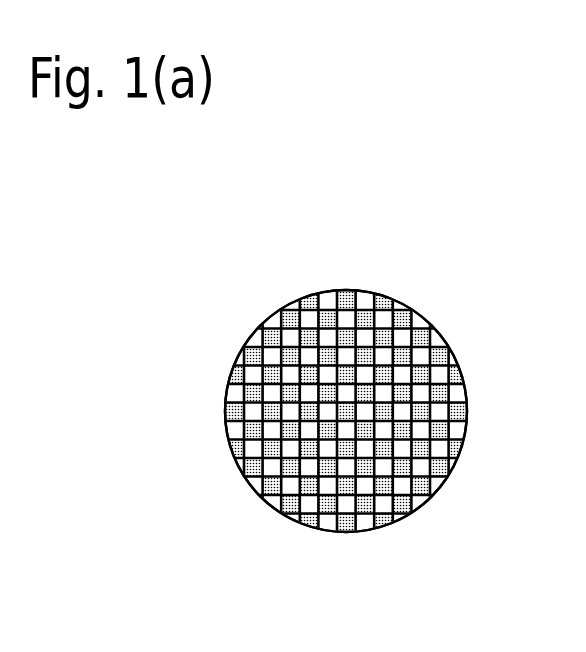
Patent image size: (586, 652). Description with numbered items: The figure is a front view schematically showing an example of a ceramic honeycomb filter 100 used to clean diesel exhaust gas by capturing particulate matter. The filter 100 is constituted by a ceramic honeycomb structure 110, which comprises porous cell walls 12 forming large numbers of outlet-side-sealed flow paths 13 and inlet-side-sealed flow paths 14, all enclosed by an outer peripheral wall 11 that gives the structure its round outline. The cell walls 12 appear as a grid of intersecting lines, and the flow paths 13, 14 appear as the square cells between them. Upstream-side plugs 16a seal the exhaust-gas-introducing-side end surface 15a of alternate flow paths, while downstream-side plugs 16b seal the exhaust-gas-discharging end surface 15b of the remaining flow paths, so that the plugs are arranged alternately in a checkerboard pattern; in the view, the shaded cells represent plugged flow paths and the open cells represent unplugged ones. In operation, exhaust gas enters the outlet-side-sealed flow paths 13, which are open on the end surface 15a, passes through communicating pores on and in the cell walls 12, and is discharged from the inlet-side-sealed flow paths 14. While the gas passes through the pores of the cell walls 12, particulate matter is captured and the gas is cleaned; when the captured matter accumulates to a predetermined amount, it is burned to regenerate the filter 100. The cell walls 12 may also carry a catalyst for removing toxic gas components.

The ceramic honeycomb filter 100 is at (288, 250).
The ceramic honeycomb structure 110 is at (408, 311).
The outer peripheral wall 11 is at (273, 512).
The porous cell walls 12 is at (308, 502).
The outlet-side-sealed flow paths 13 is at (385, 502).
The inlet-side-sealed flow paths 14 is at (367, 503).
The exhaust-gas-introducing-side end surface 15a is at (433, 483).
The exhaust-gas-discharging end surface 15b is at (399, 418).
The upstream-side plugs 16a is at (442, 432).
The downstream-side plugs 16b is at (384, 421).